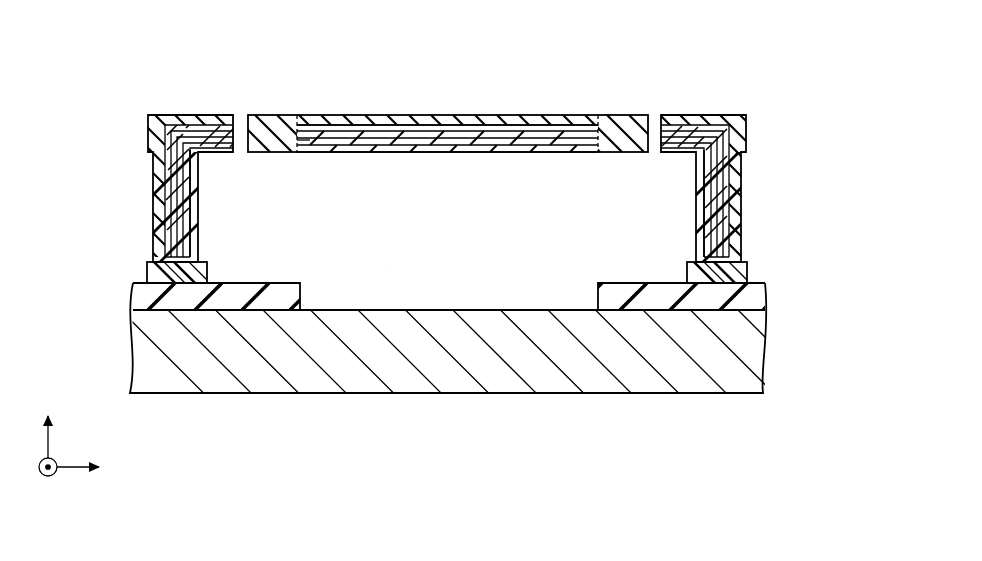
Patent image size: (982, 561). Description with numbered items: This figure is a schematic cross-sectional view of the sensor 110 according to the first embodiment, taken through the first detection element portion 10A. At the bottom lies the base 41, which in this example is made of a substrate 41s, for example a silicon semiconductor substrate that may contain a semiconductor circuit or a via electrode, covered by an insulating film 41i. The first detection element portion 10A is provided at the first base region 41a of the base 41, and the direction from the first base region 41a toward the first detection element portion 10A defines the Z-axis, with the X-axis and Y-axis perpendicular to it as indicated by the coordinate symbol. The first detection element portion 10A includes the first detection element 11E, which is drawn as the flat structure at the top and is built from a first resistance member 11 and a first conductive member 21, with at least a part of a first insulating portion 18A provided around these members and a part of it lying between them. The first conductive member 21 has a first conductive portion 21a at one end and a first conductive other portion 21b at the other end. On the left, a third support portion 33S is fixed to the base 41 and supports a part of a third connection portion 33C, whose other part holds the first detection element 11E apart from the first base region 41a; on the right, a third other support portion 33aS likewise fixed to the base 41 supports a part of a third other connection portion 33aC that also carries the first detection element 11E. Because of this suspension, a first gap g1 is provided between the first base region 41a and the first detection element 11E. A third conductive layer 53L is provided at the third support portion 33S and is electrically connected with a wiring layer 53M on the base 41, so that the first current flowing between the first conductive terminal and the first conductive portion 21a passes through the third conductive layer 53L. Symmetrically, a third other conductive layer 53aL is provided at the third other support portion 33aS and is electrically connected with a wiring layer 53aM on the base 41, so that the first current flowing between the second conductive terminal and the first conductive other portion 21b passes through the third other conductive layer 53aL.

The sensor 110 is at (832, 80).
The first detection element portion 10A is at (767, 95).
The first resistance member 11 is at (443, 115).
The first detection element 11E is at (549, 97).
The first insulating portion 18A is at (370, 115).
The first conductive member 21 is at (443, 140).
The first conductive portion 21a is at (302, 140).
The first conductive other portion 21b is at (590, 140).
The third support portion 33S is at (190, 115).
The third connection portion 33C is at (270, 115).
The third other support portion 33aS is at (700, 115).
The third other connection portion 33aC is at (618, 115).
The wiring layer 53M is at (152, 268).
The third conductive layer 53L is at (192, 232).
The third other conductive layer 53aL is at (710, 237).
The wiring layer 53aM is at (745, 275).
The base 41 is at (268, 440).
The substrate 41s is at (185, 345).
The insulating film 41i is at (268, 295).
The first base region 41a is at (454, 362).
The first gap g1 is at (386, 276).